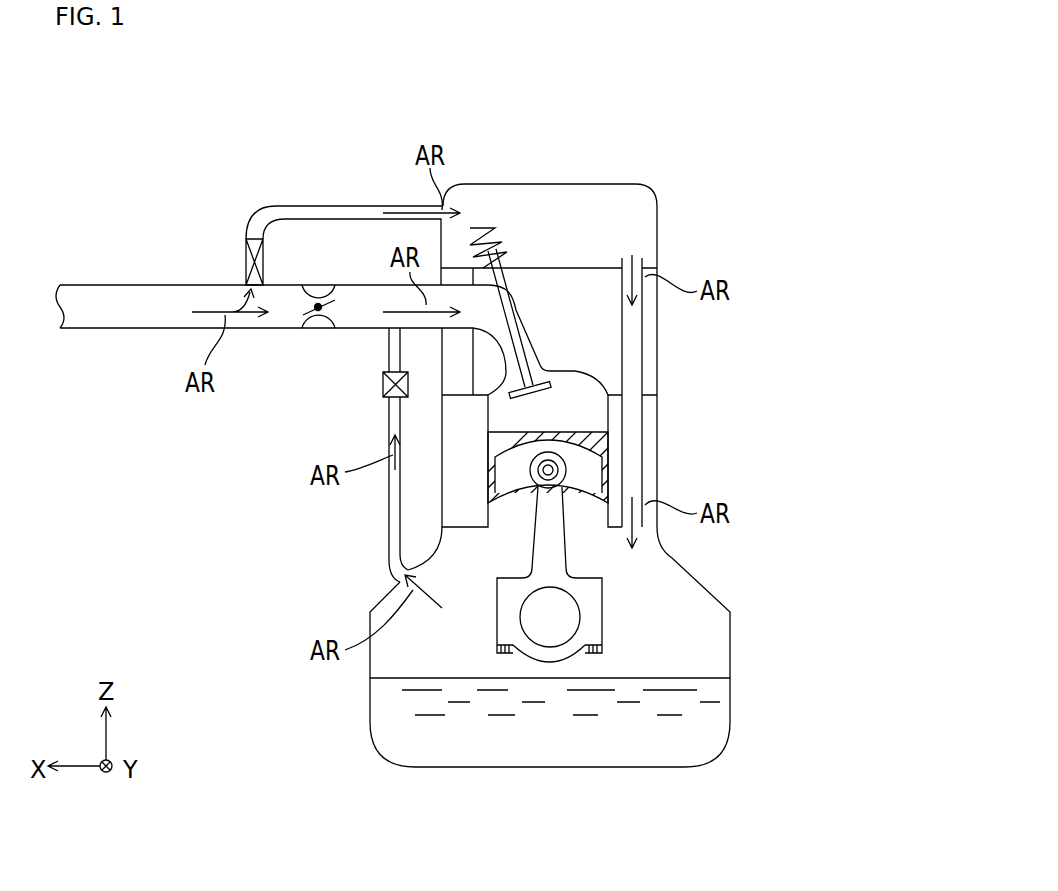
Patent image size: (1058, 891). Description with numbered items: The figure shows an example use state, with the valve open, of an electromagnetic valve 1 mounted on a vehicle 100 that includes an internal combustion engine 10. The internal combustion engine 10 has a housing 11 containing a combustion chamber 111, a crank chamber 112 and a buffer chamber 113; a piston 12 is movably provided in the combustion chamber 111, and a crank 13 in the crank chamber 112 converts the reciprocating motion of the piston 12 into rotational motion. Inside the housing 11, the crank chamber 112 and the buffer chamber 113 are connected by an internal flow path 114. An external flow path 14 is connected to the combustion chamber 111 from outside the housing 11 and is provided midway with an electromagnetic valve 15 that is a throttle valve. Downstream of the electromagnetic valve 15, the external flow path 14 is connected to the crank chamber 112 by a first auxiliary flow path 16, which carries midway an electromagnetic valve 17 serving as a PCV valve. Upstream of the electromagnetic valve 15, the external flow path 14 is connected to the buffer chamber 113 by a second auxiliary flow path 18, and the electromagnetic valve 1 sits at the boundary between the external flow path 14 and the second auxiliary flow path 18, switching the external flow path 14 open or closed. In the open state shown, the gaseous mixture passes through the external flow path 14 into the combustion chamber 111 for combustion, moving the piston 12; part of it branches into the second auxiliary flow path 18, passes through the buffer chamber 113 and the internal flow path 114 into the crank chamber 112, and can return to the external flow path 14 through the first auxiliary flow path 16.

The vehicle 100 is at (829, 145).
The internal combustion engine 10 is at (760, 236).
The housing 11 is at (686, 548).
The piston 12 is at (616, 472).
The crank 13 is at (614, 600).
The external flow path 14 is at (125, 285).
The electromagnetic valve (throttle valve) 15 is at (320, 328).
The first auxiliary flow path 16 is at (389, 515).
The electromagnetic valve (PCV valve) 17 is at (382, 393).
The second auxiliary flow path 18 is at (360, 206).
The electromagnetic valve 1 is at (245, 227).
The combustion chamber 111 is at (585, 410).
The crank chamber 112 is at (690, 650).
The buffer chamber 113 is at (620, 213).
The internal flow path 114 is at (645, 330).